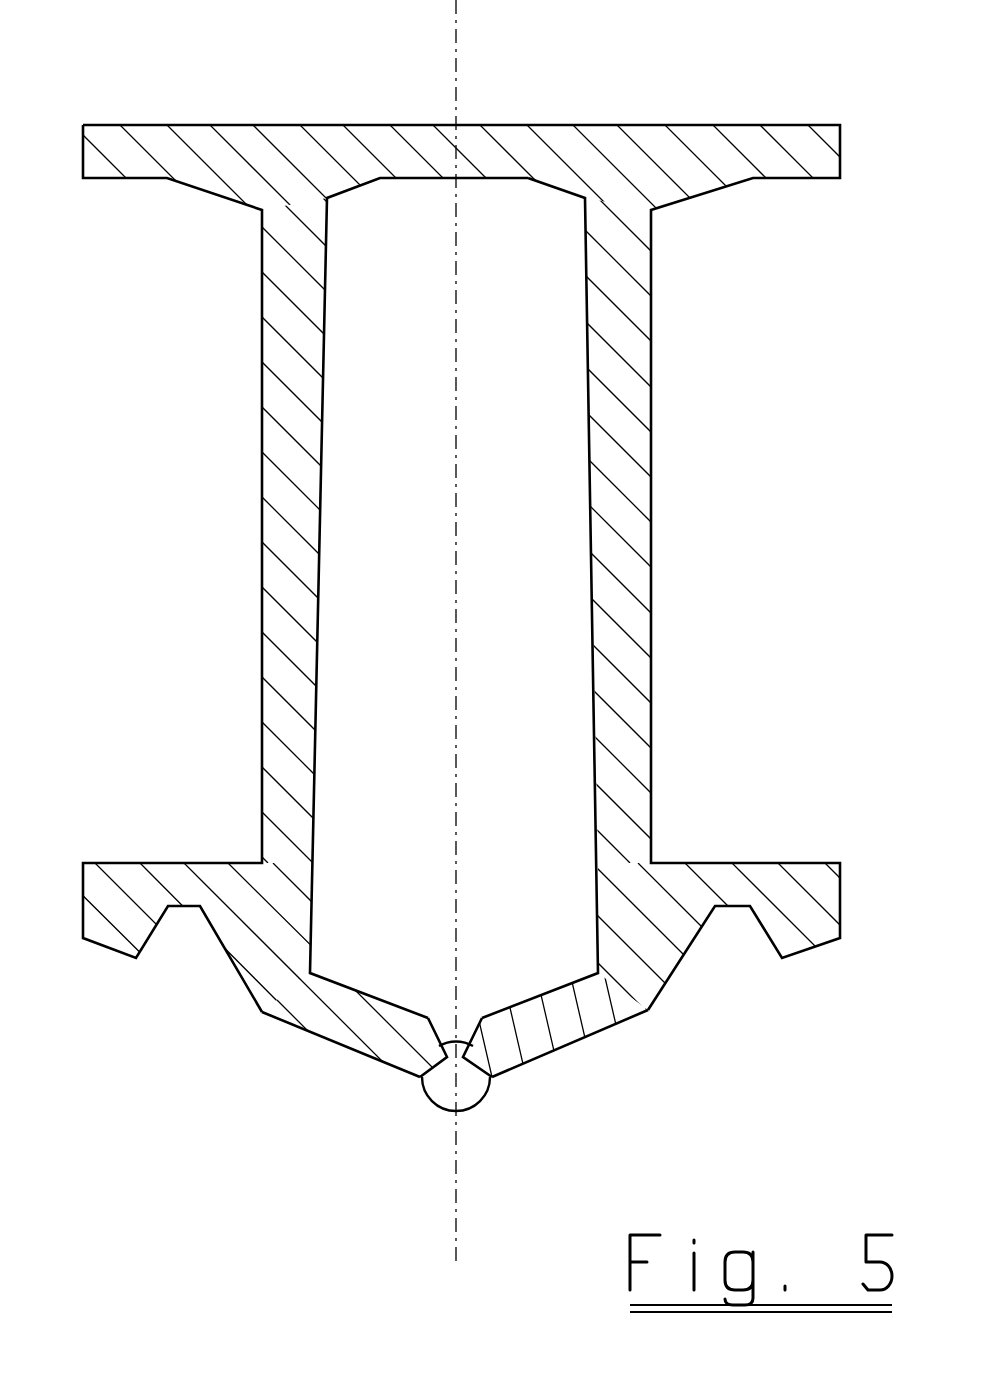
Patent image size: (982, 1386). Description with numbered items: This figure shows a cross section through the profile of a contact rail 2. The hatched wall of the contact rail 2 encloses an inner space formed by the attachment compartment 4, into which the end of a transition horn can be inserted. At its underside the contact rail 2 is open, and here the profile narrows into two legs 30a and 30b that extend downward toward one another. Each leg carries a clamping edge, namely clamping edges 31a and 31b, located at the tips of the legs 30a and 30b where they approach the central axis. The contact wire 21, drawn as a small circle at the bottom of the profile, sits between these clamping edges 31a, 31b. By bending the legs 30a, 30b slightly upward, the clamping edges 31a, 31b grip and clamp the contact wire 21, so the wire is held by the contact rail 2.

The contact rail 2 is at (642, 512).
The attachment compartment 4 is at (380, 590).
The contact wire 21 is at (438, 1110).
The leg 30a is at (577, 1022).
The leg 30b is at (343, 1023).
The clamping edge 31a is at (487, 1090).
The clamping edge 31b is at (420, 1078).